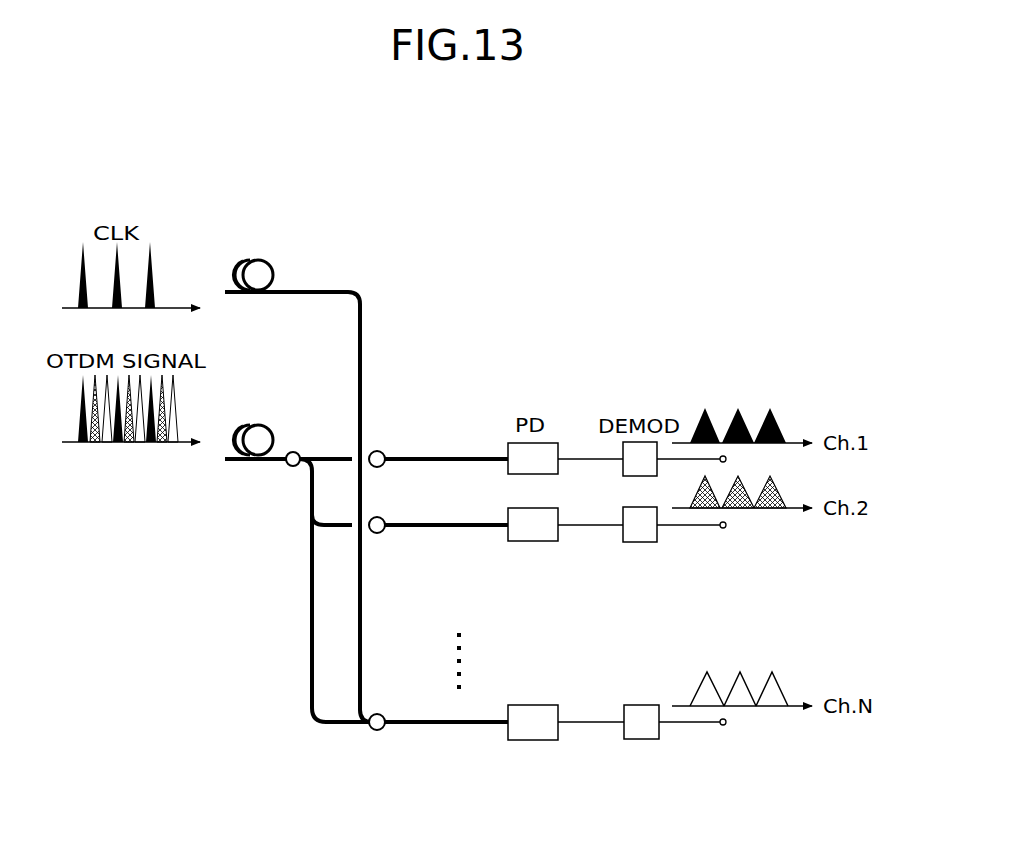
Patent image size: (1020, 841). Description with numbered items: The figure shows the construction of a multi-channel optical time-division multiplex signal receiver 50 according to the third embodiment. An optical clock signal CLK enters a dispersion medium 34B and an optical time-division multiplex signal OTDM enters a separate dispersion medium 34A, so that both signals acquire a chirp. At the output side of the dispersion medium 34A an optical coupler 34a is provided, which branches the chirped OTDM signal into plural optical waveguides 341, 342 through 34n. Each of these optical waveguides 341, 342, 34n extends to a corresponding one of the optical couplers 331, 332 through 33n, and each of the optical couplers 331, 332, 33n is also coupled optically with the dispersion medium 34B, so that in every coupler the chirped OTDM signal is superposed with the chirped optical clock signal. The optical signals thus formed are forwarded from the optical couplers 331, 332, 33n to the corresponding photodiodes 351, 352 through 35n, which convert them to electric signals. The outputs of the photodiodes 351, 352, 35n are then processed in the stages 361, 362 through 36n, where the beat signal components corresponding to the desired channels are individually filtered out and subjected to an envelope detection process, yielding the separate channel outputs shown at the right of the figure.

The multi-channel optical time-division multiplex signal receiver 50 is at (406, 169).
The dispersion medium 34B is at (275, 278).
The dispersion medium 34A is at (275, 444).
The optical coupler 34a is at (291, 468).
The optical waveguide 341 is at (345, 464).
The optical waveguide 342 is at (338, 530).
The optical waveguide 34n is at (338, 727).
The optical coupler 331 is at (378, 450).
The optical coupler 332 is at (378, 534).
The optical coupler 33n is at (379, 713).
The photodiode 351 is at (512, 476).
The photodiode 352 is at (536, 542).
The photodiode 35n is at (552, 704).
The output electric signal 361 is at (638, 477).
The output electric signal 362 is at (642, 543).
The output electric signal 36n is at (645, 704).